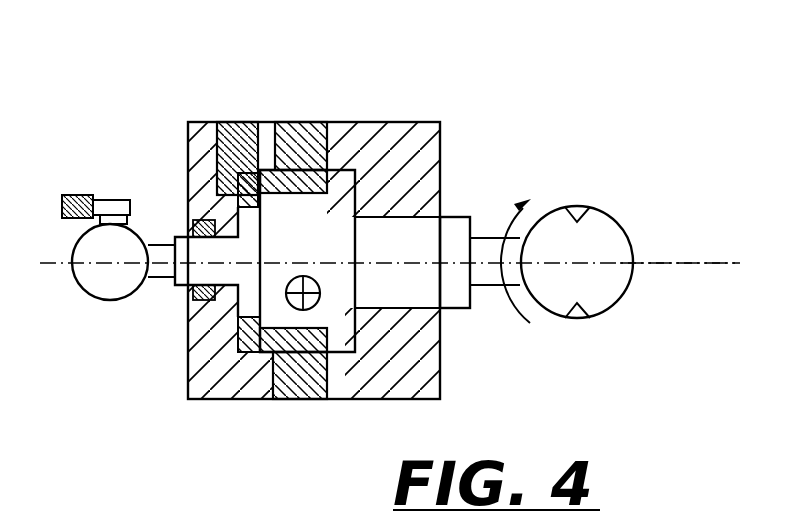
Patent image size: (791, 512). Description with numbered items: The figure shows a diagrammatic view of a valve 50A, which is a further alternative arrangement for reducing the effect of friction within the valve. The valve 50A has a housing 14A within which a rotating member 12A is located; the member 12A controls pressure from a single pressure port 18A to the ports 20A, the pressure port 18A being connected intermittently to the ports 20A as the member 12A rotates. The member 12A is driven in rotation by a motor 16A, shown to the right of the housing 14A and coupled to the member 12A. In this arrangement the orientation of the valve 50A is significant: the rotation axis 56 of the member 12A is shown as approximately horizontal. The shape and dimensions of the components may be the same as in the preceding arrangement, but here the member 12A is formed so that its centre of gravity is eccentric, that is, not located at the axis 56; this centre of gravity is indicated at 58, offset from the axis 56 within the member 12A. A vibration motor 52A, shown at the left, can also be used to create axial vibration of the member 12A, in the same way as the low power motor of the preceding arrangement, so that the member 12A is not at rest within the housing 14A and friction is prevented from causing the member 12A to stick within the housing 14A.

The valve 50A is at (160, 100).
The pressure port 18A is at (243, 130).
The ports 20A is at (295, 132).
The motor 16A is at (595, 235).
The rotation axis 56 is at (657, 265).
The vibration motor 52A is at (90, 293).
The member 12A is at (334, 261).
The housing 14A is at (207, 370).
The centre of gravity 58 is at (318, 300).